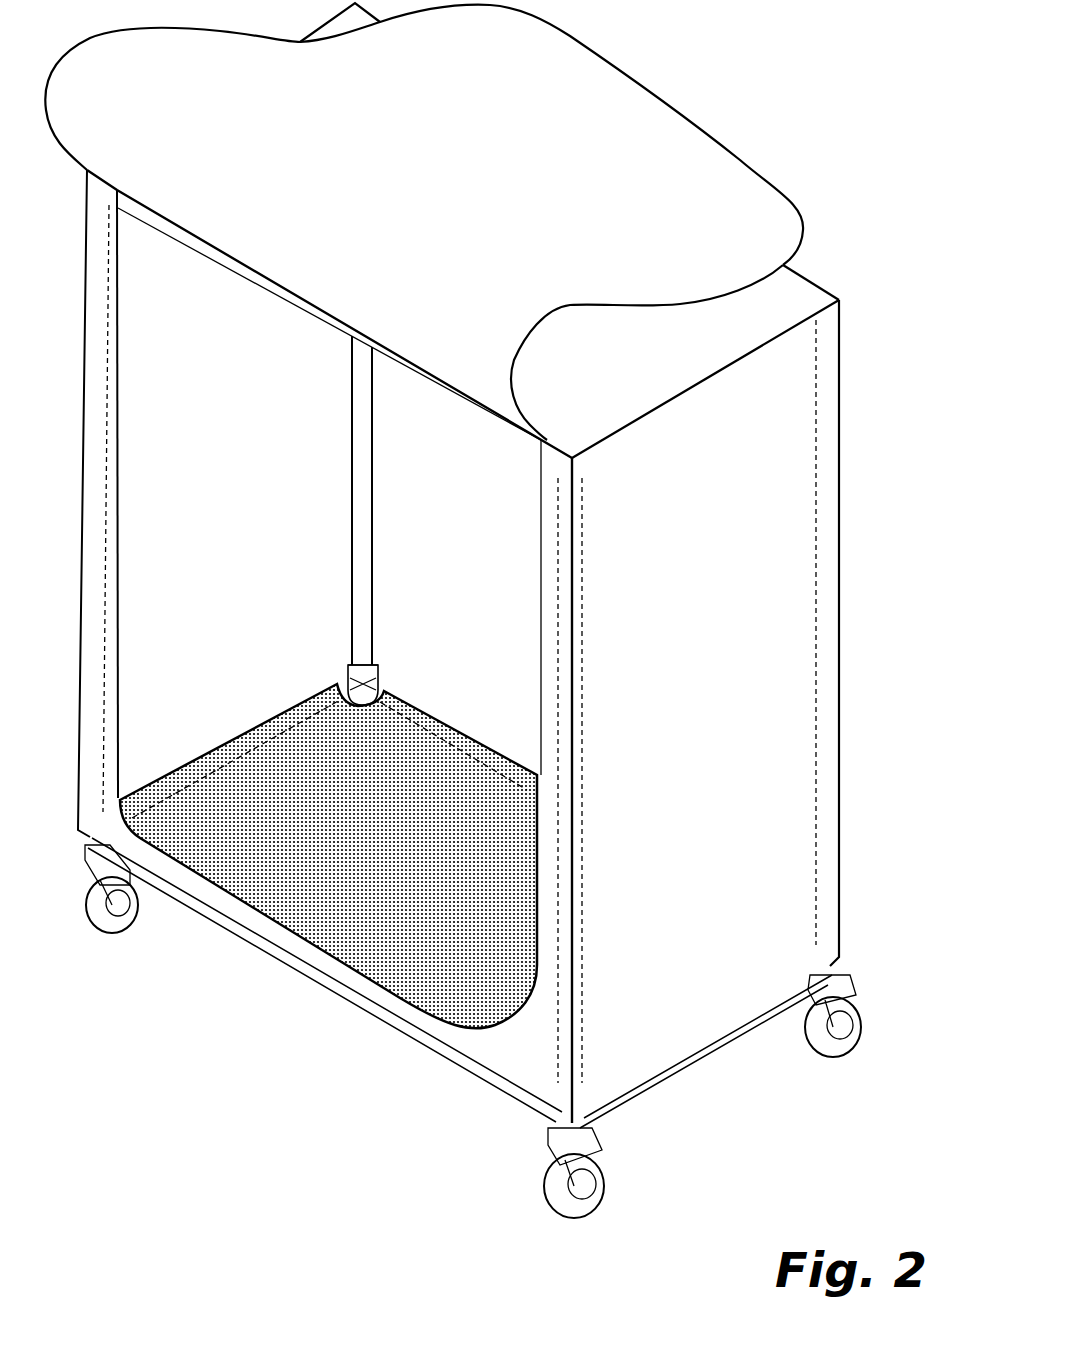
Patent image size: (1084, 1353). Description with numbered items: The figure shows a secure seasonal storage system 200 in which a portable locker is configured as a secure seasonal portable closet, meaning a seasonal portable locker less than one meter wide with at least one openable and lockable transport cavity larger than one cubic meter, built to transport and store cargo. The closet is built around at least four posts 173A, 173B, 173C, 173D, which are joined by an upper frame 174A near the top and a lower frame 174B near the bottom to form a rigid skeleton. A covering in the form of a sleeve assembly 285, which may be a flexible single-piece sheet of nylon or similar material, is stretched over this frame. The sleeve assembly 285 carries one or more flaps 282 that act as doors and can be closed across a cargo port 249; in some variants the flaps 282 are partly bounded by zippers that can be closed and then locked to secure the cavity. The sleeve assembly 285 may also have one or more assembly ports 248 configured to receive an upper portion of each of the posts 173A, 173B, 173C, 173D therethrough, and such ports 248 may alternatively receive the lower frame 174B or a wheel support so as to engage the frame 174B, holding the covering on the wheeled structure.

The secure seasonal storage system 200 is at (453, 616).
The flap 282 is at (652, 112).
The sleeve assembly 285 is at (705, 400).
The upper frame 174A is at (305, 310).
The lower frame 174B is at (378, 680).
The post 173A is at (106, 472).
The post 173B is at (362, 510).
The post 173C is at (830, 890).
The post 173D is at (580, 909).
The assembly port 248 is at (470, 1005).
The cargo port 249 is at (298, 888).